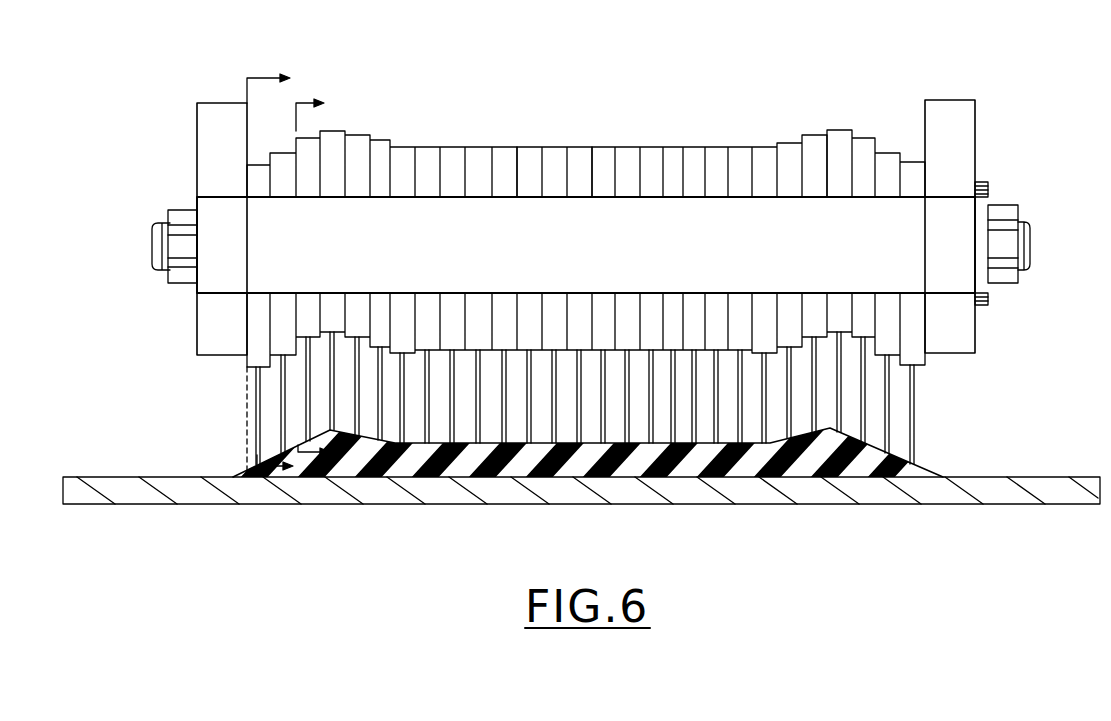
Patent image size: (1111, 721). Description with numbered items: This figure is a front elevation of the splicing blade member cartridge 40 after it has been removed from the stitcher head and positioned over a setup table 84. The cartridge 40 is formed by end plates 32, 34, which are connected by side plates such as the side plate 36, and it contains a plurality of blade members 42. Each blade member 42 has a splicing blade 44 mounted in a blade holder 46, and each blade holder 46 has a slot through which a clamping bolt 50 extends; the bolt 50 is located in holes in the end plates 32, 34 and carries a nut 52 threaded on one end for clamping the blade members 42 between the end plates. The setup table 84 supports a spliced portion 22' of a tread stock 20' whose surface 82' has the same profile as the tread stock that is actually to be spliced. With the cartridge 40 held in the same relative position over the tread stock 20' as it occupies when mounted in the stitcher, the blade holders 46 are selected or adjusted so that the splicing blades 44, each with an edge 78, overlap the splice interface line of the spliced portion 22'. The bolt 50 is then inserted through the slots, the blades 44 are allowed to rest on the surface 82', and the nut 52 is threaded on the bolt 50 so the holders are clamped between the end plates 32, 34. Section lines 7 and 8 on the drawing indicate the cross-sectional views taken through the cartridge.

The tread stock 20' is at (868, 497).
The spliced portion 22' is at (782, 495).
The end plate 32 is at (210, 133).
The end plate 34 is at (958, 130).
The side plate 36 is at (958, 222).
The splicing blade member cartridge 40 is at (597, 285).
The blade members 42 is at (428, 147).
The splicing blade 44 is at (449, 440).
The blade holder 46 is at (578, 158).
The clamping bolt 50 is at (1003, 215).
The nut 52 is at (185, 220).
The edge 78 is at (308, 447).
The surface 82' is at (740, 491).
The setup table 84 is at (975, 495).
The section line 7 is at (278, 272).
The section line 8 is at (324, 276).